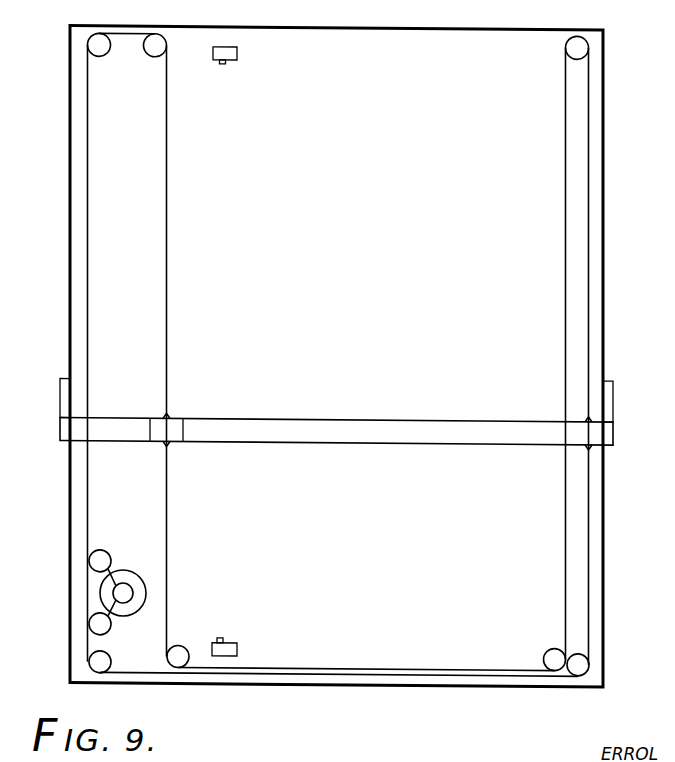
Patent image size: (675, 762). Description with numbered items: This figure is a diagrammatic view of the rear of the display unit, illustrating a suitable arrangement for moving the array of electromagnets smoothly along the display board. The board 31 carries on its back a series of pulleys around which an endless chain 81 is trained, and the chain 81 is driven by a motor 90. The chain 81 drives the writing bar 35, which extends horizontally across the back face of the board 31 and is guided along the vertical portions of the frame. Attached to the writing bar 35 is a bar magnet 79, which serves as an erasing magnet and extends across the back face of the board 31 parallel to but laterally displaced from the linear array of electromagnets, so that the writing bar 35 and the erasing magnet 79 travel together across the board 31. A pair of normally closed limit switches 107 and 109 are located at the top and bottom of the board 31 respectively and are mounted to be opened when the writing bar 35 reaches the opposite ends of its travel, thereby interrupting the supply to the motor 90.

The board 31 is at (446, 8).
The writing bar 35 is at (613, 400).
The bar magnet 79 is at (359, 415).
The endless chain 81 is at (166, 181).
The motor 90 is at (135, 570).
The limit switch 107 is at (237, 51).
The limit switch 109 is at (237, 648).